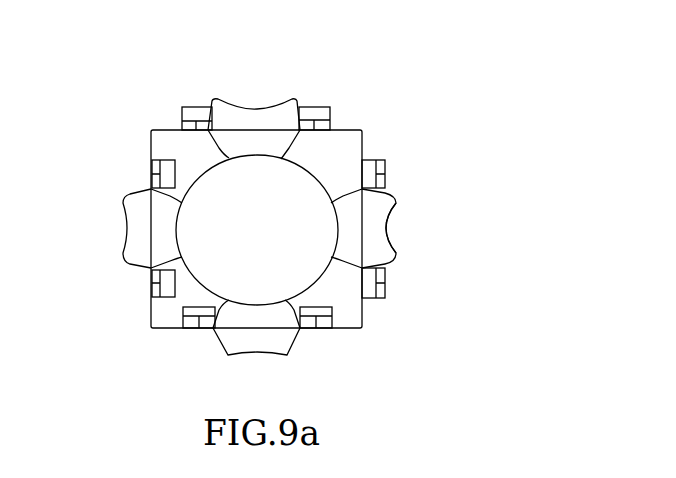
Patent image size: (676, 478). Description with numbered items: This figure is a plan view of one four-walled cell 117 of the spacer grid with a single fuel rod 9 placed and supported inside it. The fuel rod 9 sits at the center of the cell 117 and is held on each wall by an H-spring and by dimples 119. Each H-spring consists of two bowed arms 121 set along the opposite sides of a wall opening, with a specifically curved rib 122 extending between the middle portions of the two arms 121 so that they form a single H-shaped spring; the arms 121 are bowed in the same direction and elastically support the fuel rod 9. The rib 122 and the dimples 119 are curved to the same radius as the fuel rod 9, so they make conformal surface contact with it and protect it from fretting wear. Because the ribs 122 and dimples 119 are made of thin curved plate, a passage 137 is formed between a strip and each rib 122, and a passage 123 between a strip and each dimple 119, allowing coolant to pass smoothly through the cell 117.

The fuel rod 9 is at (283, 257).
The four-walled cell 117 is at (330, 153).
The dimple 119 is at (132, 263).
The bowed arm 121 is at (380, 177).
The curved rib 122 is at (388, 223).
The passage 123 is at (241, 148).
The passage 137 is at (238, 320).